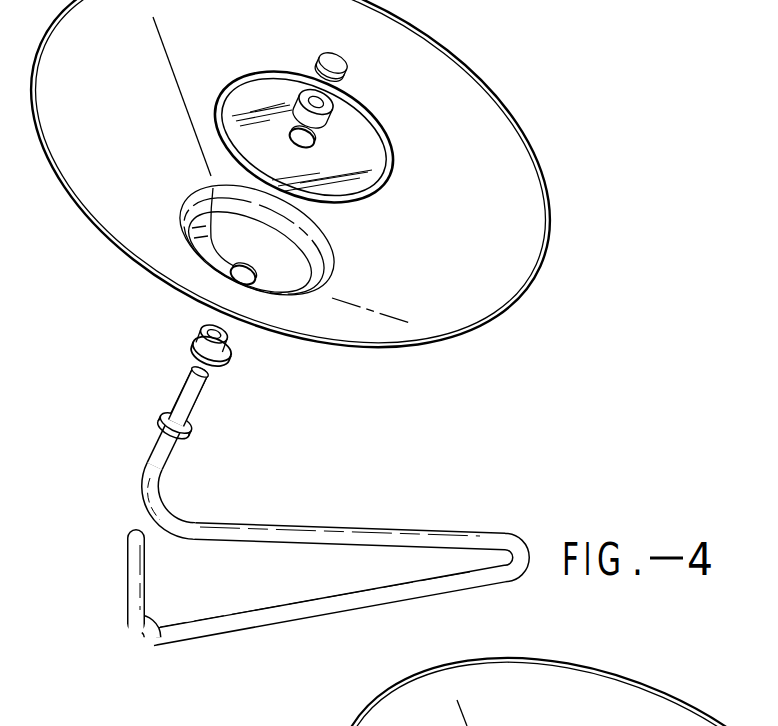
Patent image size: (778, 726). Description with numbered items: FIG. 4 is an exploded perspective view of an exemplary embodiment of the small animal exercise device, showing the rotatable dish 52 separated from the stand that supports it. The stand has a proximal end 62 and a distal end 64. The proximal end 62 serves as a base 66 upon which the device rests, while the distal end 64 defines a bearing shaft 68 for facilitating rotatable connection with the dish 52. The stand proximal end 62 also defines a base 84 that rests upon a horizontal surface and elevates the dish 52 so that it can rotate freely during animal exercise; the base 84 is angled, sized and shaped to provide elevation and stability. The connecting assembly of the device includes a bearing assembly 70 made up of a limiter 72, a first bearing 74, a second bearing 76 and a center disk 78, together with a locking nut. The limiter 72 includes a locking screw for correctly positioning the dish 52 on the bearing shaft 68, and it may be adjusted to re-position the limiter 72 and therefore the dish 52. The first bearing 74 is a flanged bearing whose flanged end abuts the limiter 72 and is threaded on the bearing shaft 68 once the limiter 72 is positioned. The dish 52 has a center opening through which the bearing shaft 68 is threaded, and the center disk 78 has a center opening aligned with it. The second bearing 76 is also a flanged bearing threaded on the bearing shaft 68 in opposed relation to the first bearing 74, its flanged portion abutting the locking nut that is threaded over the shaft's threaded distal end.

The dish 52 is at (550, 193).
The proximal end 62 is at (135, 538).
The distal end 64 is at (205, 395).
The base 66 is at (380, 595).
The bearing shaft 68 is at (167, 462).
The bearing assembly 70 is at (122, 304).
The limiter 72 is at (190, 427).
The first bearing 74 is at (202, 337).
The second bearing 76 is at (328, 103).
The center disk 78 is at (385, 152).
The base 84 is at (153, 638).